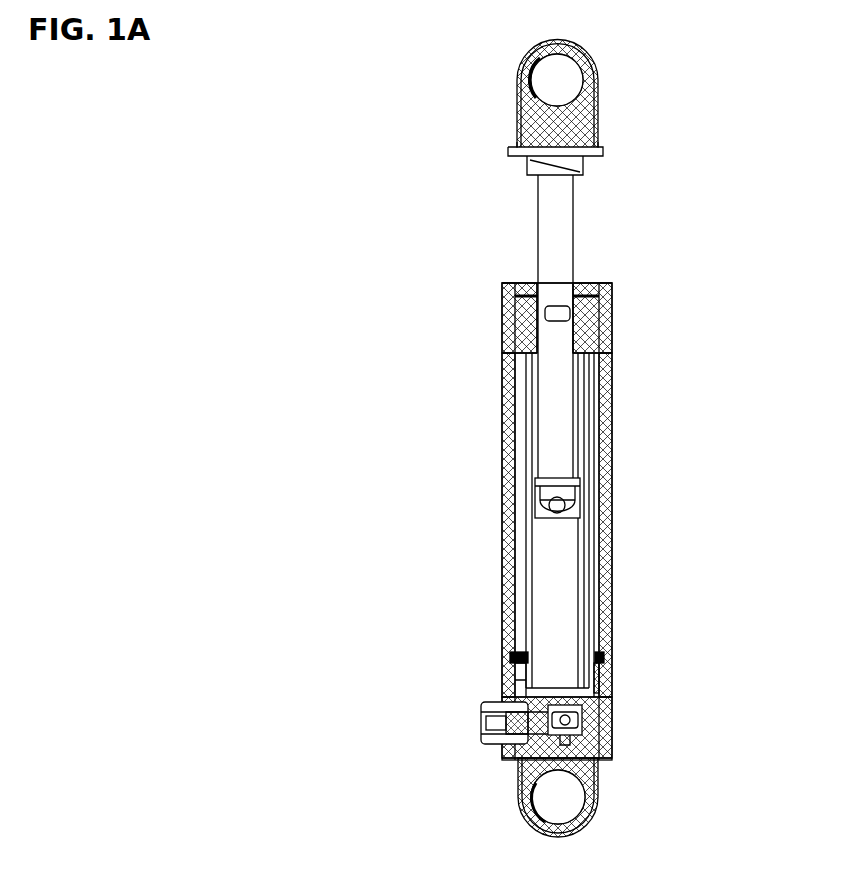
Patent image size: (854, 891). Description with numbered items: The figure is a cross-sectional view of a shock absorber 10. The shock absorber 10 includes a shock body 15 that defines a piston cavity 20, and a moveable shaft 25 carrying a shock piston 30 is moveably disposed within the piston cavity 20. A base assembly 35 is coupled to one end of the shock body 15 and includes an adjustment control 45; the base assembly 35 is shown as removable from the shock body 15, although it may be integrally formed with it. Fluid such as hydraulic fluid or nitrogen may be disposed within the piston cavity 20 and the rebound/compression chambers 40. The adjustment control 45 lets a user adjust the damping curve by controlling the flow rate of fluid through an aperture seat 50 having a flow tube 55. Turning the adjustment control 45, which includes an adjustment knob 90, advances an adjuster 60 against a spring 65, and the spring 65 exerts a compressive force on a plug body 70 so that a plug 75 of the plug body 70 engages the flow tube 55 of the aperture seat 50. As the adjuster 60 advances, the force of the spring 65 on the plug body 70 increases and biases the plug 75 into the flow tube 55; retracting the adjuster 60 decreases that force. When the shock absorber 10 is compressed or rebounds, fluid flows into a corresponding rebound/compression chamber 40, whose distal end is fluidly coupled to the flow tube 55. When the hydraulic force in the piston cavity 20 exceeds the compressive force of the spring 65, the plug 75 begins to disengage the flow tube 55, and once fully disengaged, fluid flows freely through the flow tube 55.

The shock absorber 10 is at (300, 143).
The shock body 15 is at (510, 525).
The piston cavity 20 is at (527, 412).
The moveable shaft 25 is at (538, 227).
The shock piston 30 is at (515, 468).
The base assembly 35 is at (609, 787).
The rebound/compression chamber 40 is at (520, 365).
The adjustment control 45 is at (473, 689).
The aperture seat 50 is at (606, 682).
The flow tube 55 is at (610, 757).
The adjuster 60 is at (482, 747).
The spring 65 is at (517, 656).
The plug body 70 is at (610, 700).
The plug 75 is at (611, 738).
The adjustment knob 90 is at (478, 713).